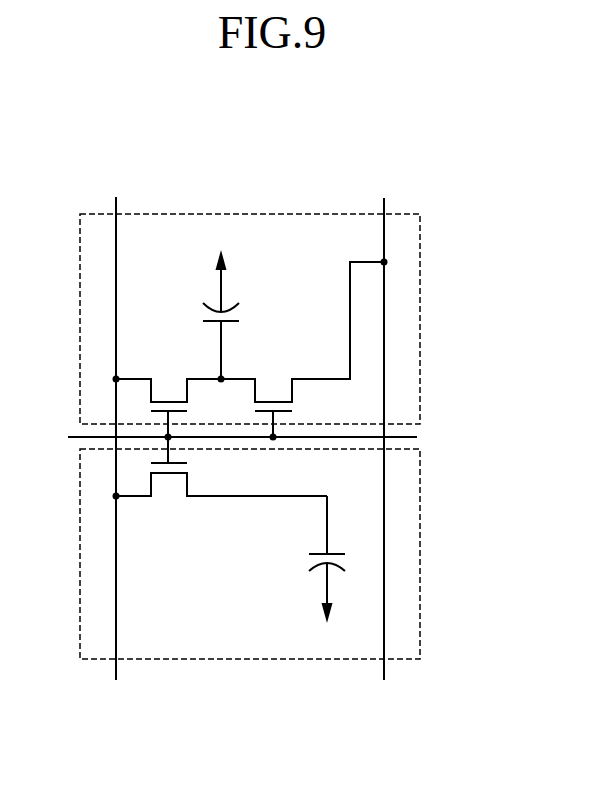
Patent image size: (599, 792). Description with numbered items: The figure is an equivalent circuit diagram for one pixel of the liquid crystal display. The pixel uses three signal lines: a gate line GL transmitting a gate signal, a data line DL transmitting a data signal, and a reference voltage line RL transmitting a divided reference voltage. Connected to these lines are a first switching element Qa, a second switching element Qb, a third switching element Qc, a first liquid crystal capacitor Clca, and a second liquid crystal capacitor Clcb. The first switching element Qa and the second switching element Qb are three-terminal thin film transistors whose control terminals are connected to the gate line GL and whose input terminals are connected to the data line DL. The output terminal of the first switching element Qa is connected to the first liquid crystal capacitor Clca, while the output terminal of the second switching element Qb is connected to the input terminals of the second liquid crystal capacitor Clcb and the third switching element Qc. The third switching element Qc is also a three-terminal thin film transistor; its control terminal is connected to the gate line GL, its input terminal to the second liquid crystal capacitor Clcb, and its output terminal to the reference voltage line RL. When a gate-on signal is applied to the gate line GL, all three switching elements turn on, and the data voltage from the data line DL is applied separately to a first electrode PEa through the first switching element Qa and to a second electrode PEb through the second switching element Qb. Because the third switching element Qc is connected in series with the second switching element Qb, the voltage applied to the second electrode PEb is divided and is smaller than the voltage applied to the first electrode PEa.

The data line DL is at (116, 426).
The reference voltage line RL is at (384, 426).
The gate line GL is at (227, 439).
The second electrode PEb is at (420, 320).
The first electrode PEa is at (420, 554).
The first switching element Qa is at (220, 479).
The second switching element Qb is at (167, 398).
The third switching element Qc is at (303, 350).
The first liquid crystal capacitor Clca is at (298, 559).
The second liquid crystal capacitor Clcb is at (249, 314).